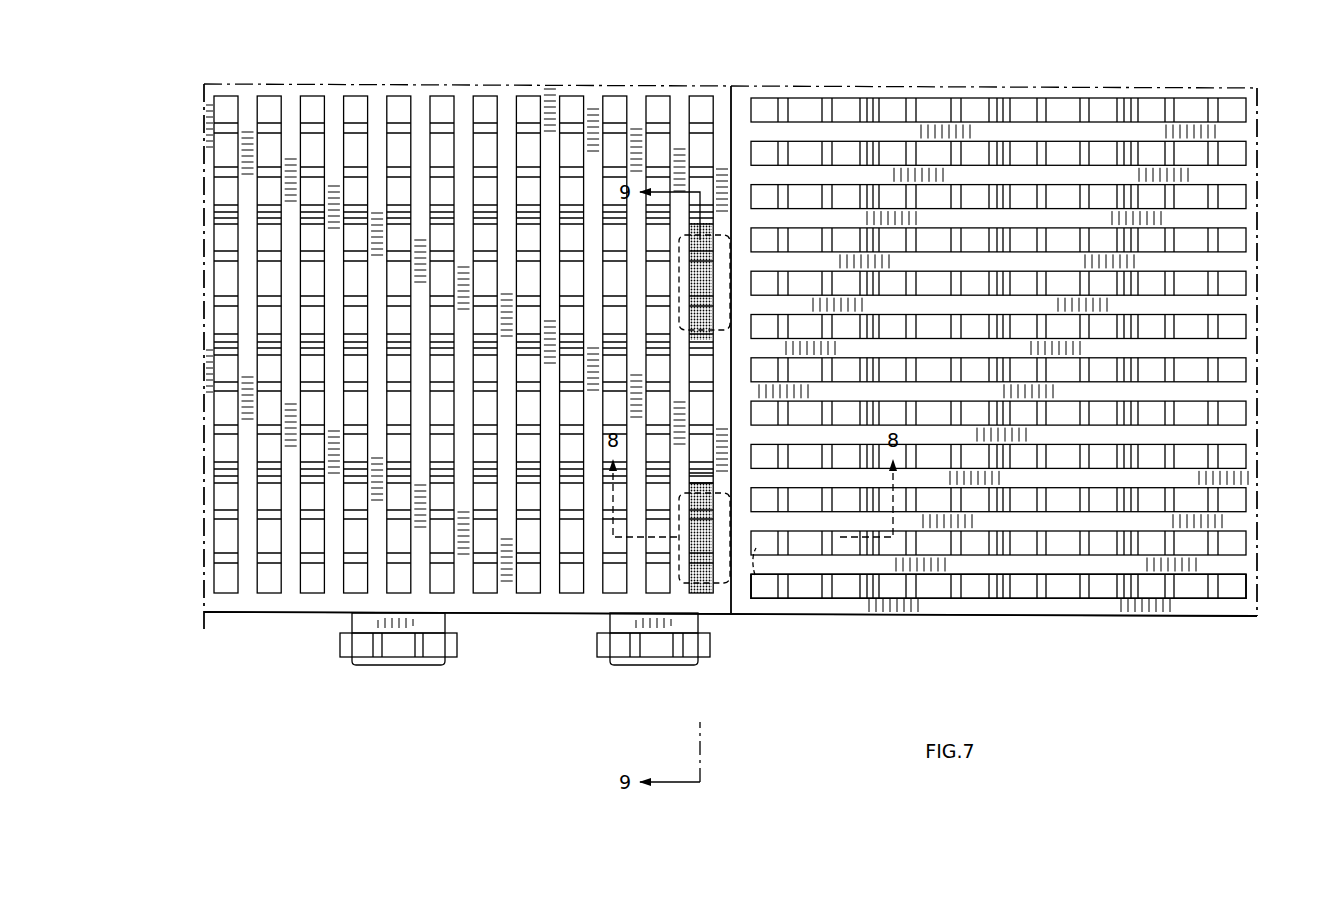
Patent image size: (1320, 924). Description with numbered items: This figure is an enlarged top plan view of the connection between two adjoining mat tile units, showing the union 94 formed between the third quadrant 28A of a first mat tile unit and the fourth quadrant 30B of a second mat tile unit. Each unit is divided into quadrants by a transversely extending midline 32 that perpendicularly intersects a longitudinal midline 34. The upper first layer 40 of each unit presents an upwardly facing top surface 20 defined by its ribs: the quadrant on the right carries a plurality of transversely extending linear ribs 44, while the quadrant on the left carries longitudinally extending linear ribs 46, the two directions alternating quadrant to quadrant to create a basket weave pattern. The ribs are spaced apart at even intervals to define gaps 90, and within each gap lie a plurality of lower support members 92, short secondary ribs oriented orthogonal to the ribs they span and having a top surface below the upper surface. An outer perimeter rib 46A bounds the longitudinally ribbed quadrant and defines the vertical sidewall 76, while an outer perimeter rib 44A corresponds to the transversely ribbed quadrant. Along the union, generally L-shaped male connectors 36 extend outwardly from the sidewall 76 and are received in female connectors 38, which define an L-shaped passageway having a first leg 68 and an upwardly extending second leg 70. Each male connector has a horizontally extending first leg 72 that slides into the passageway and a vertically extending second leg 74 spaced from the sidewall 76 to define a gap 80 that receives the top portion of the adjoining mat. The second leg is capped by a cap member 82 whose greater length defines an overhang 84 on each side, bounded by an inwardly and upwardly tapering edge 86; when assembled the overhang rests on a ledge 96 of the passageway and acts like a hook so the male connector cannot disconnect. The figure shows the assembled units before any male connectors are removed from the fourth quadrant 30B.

The top surface 20 is at (722, 349).
The upper first layer 40 is at (287, 240).
The gaps 90 is at (270, 112).
The lower support members 92 is at (226, 304).
The longitudinally extending linear ribs 46 is at (245, 452).
The outer perimeter rib 46A is at (720, 245).
The transversely extending linear ribs 44 is at (1072, 217).
The outer perimeter rib 44A is at (950, 600).
The longitudinal midline 34 is at (205, 580).
The transversely extending midline 32 is at (660, 85).
The union 94 is at (735, 140).
The vertical sidewall 76 is at (262, 618).
The fourth quadrant 30B is at (236, 625).
The third quadrant 28A is at (1115, 632).
The male connectors 36 is at (693, 403).
The female connectors 38 is at (942, 592).
The second leg of L-shaped passageway 70 is at (917, 590).
The first leg 72 is at (712, 283).
The second leg 74 is at (567, 694).
The cap member 82 is at (408, 655).
The gap 80 is at (728, 304).
The overhang 84 is at (700, 338).
The tapering edge 86 is at (554, 477).
The ledge 96 is at (700, 483).
The first leg of L-shaped passageway 68 is at (755, 575).